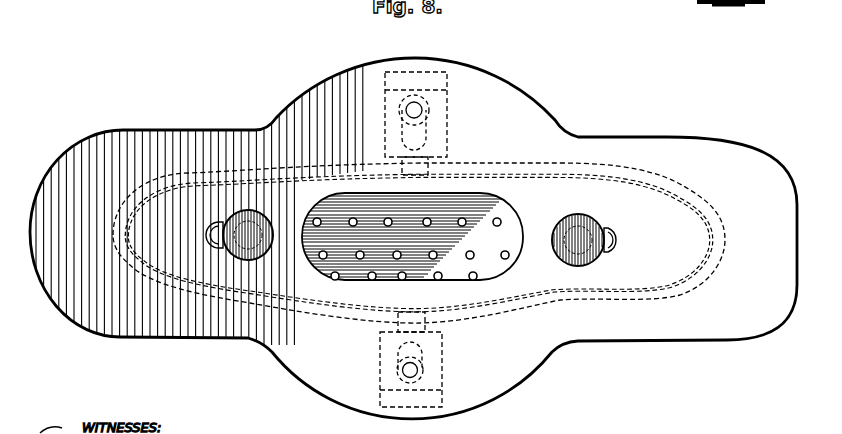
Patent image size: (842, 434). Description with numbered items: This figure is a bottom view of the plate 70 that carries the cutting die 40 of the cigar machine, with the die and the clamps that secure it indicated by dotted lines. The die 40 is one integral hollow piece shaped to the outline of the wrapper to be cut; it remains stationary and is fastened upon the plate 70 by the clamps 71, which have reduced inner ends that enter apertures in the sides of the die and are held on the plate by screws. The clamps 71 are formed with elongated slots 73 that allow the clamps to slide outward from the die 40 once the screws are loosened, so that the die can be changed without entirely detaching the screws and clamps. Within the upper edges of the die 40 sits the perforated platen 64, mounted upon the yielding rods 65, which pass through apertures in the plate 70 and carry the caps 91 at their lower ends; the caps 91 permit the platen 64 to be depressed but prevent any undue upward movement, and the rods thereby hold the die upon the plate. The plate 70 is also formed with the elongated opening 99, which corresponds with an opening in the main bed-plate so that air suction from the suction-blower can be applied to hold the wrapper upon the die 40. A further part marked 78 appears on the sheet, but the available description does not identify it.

The die 40 is at (150, 266).
The perforated platen 64 is at (404, 238).
The yielding rods 65 is at (258, 256).
The plate 70 is at (413, 234).
The clamps 71 is at (447, 100).
The elongated slots 73 is at (430, 134).
The strap 78 is at (428, 15).
The caps 91 is at (272, 226).
The elongated opening 99 is at (516, 208).